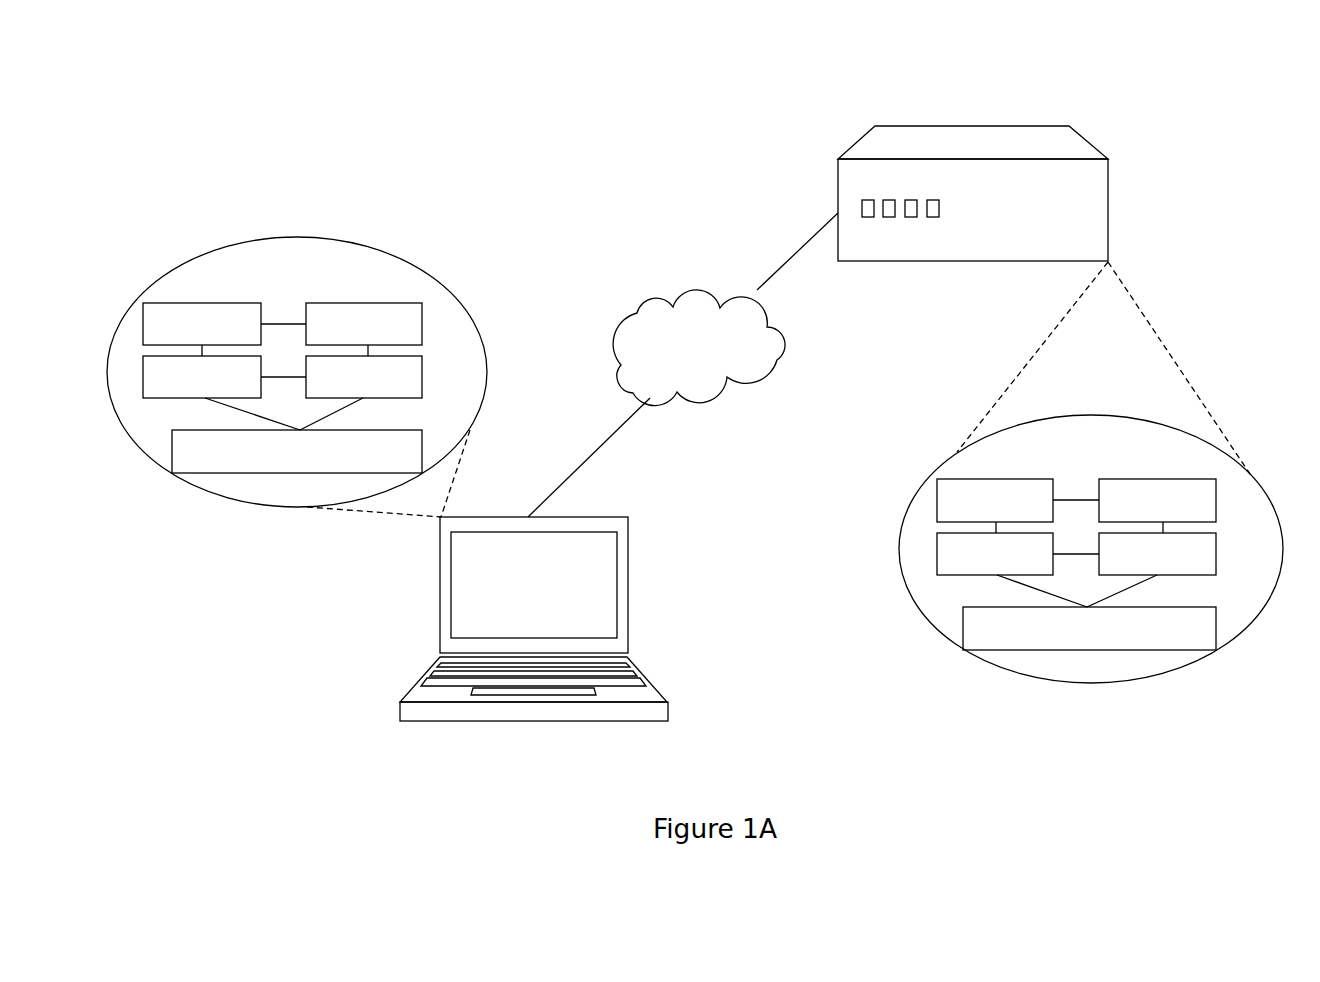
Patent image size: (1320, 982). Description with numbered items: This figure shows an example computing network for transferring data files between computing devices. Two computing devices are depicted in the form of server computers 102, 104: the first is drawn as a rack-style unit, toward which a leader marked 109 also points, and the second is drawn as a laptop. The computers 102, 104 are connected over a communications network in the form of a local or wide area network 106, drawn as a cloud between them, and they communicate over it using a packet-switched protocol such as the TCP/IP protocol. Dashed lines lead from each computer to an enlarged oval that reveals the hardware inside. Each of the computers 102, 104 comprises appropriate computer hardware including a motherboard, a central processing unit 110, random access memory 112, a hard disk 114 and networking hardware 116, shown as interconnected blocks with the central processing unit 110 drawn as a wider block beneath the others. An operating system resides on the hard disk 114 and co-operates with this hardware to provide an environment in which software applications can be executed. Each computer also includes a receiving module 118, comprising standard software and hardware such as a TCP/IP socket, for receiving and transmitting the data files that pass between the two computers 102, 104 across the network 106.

The server computer 102 is at (1108, 210).
The server computer 104 is at (440, 585).
The local or wide area network 106 is at (685, 290).
The server housing 109 is at (977, 123).
The central processing unit 110 is at (694, 540).
The random access memory 112 is at (761, 412).
The hard disk 114 is at (598, 465).
The networking hardware 116 is at (761, 465).
The receiving module 118 is at (598, 412).